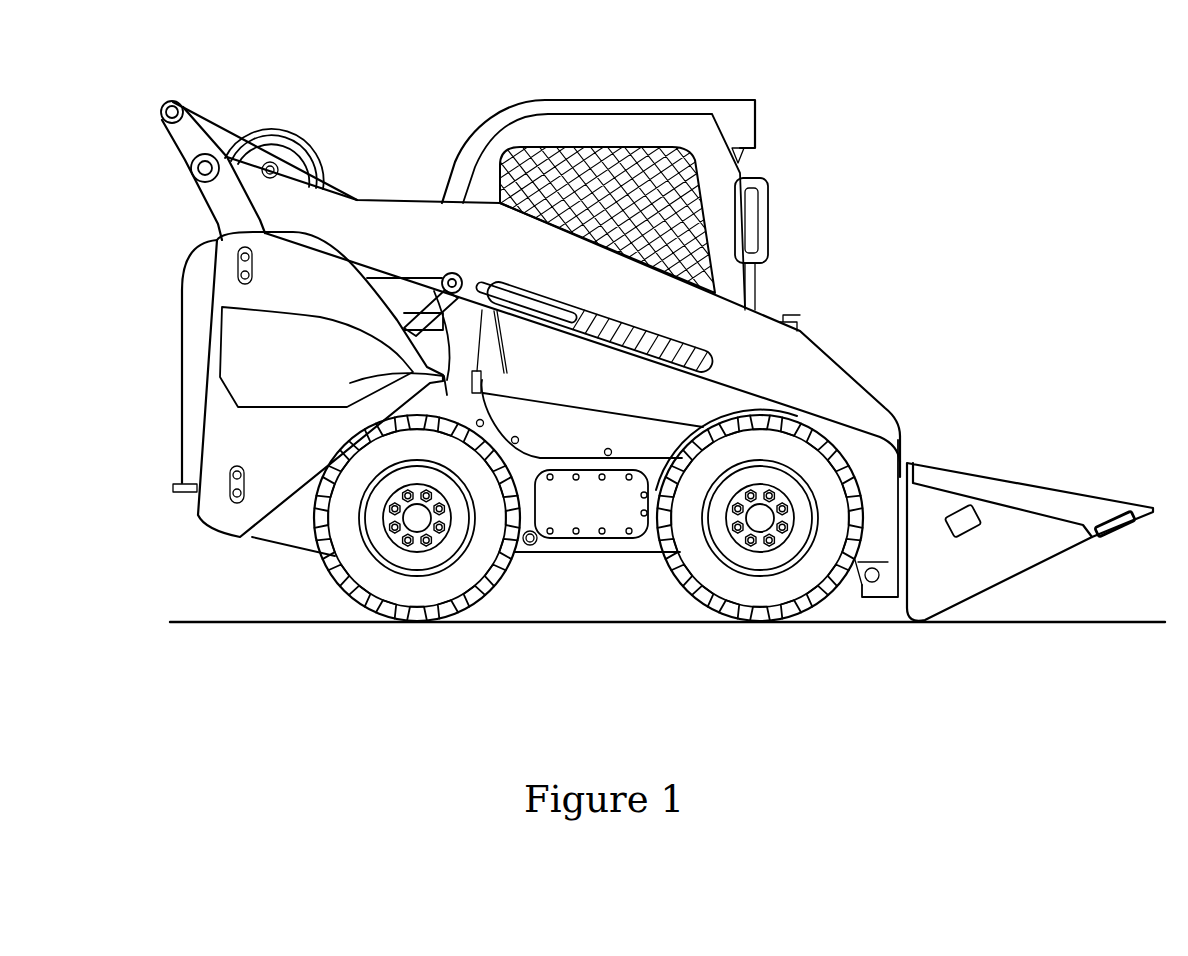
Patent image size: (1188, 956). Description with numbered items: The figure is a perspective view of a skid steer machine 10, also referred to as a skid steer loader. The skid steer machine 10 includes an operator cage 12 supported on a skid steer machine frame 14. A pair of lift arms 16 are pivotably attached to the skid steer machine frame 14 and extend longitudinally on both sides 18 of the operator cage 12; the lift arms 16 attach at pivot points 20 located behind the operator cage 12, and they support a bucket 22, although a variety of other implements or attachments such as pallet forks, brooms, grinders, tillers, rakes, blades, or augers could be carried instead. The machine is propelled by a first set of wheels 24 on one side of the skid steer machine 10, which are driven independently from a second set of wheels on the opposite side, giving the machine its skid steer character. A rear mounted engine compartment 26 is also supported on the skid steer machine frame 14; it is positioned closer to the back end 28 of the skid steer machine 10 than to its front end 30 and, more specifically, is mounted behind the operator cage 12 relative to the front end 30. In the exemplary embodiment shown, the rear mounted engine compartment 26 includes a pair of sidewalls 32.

The skid steer machine 10 is at (855, 110).
The operator cage 12 is at (735, 220).
The skid steer machine frame 14 is at (597, 552).
The lift arms 16 is at (340, 194).
The sides 18 is at (548, 88).
The pivot points 20 is at (262, 148).
The bucket 22 is at (1027, 486).
The first set of wheels 24 is at (414, 622).
The rear mounted engine compartment 26 is at (178, 270).
The back end 28 is at (205, 92).
The front end 30 is at (906, 302).
The sidewalls 32 is at (213, 236).